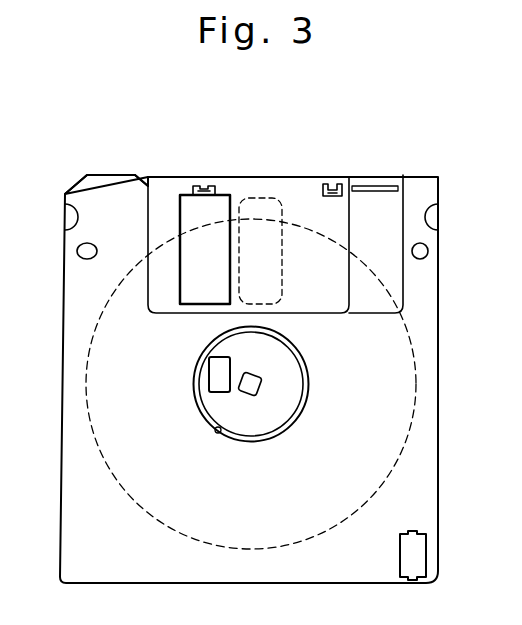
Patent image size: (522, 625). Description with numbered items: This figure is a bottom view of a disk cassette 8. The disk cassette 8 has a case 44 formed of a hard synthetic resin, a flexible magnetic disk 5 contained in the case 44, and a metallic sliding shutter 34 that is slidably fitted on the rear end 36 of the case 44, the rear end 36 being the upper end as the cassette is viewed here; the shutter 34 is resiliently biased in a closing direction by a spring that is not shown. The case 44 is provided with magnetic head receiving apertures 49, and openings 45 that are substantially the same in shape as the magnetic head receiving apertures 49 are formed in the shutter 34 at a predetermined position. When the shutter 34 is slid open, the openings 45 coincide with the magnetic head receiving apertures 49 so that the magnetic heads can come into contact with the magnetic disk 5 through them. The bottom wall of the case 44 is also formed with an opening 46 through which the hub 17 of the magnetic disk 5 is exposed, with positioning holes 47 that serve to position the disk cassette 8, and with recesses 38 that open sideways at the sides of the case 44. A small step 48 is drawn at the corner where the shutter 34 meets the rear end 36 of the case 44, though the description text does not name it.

The disk cassette 8 is at (438, 356).
The rear end of the case 36 is at (103, 174).
The notch 48 is at (148, 177).
The sliding shutter 34 is at (245, 177).
The openings 45 is at (187, 196).
The magnetic head receiving apertures 49 is at (287, 199).
The recesses 38 is at (65, 218).
The positioning holes 47 is at (78, 254).
The magnetic disk 5 is at (412, 420).
The hub 17 is at (203, 390).
The opening 46 is at (218, 432).
The case 44 is at (423, 512).